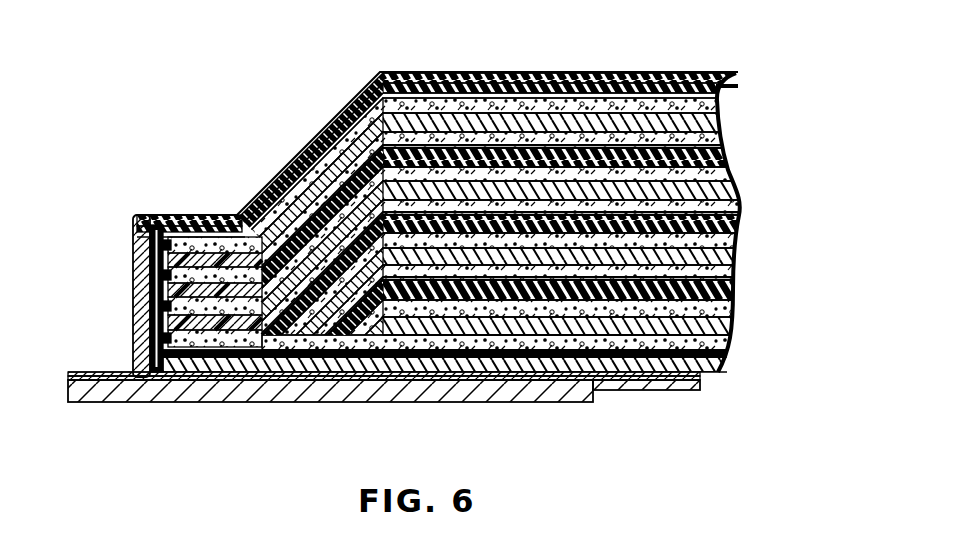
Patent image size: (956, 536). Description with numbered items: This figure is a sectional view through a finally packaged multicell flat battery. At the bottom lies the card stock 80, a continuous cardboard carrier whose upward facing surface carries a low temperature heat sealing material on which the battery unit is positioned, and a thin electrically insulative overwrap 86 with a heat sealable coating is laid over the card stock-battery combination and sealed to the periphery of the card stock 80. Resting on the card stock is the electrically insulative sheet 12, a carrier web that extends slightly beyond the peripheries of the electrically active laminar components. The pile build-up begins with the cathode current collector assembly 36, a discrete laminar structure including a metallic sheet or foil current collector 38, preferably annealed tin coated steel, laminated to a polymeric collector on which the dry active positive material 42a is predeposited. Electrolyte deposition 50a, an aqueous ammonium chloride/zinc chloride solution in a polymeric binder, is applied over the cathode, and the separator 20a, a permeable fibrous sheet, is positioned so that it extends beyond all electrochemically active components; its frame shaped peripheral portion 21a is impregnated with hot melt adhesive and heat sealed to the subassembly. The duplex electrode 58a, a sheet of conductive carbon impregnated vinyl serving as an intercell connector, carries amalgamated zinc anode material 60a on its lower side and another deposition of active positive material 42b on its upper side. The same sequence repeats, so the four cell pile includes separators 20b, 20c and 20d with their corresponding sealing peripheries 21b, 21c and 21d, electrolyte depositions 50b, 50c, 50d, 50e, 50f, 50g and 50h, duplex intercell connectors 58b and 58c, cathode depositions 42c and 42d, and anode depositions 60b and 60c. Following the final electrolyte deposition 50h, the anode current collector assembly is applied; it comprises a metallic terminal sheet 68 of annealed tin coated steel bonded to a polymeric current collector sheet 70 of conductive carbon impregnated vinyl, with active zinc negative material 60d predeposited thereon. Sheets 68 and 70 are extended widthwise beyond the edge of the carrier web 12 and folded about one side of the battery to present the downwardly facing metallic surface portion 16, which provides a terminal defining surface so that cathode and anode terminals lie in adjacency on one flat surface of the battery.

The electrically insulative sheet 12 is at (672, 378).
The downwardly facing metallic surface portion 16 is at (547, 381).
The separator element 20a is at (737, 365).
The separator element 20b is at (737, 290).
The separator element 20c is at (730, 205).
The separator element 20d is at (733, 110).
The peripheral sealing portion 21a is at (133, 337).
The terminal 21b is at (133, 307).
The terminal 21c is at (133, 277).
The terminal 21d is at (133, 242).
The cathode current collector assembly 36 is at (630, 368).
The metallic sheet current collector 38 is at (597, 357).
The cathode electrode deposition 42a is at (712, 385).
The cathode electrode deposition 42b is at (737, 313).
The current collector 42c is at (732, 222).
The current collector 42d is at (728, 140).
The electrolyte deposition 50a is at (733, 372).
The electrolyte deposition 50b is at (737, 352).
The electrolyte deposition 50c is at (736, 303).
The electrolyte deposition 50d is at (736, 276).
The electrolyte deposition 50e is at (732, 233).
The electrolyte deposition 50f is at (730, 188).
The electrolyte deposition 50g is at (724, 120).
The electrolyte deposition 50h is at (703, 118).
The duplex electrode 58a is at (737, 328).
The duplex intercell connector element 58b is at (733, 248).
The duplex intercell connector element 58c is at (735, 152).
The anode deposition 60a is at (738, 340).
The anode deposition 60b is at (735, 262).
The anode deposition 60c is at (727, 170).
The anode deposition 60d is at (677, 100).
The metallic sheet terminal surface portion 68 is at (520, 88).
The polymeric current collector sheet 70 is at (597, 96).
The card stock 80 is at (470, 395).
The overwrap 86 is at (470, 73).